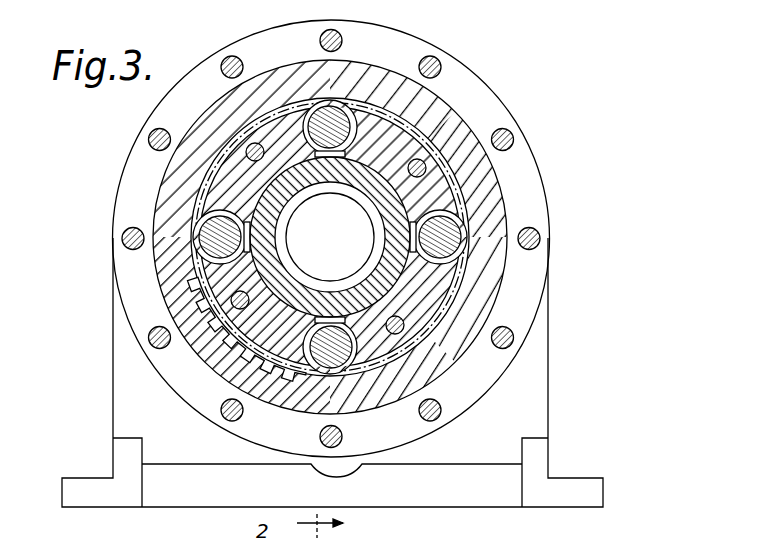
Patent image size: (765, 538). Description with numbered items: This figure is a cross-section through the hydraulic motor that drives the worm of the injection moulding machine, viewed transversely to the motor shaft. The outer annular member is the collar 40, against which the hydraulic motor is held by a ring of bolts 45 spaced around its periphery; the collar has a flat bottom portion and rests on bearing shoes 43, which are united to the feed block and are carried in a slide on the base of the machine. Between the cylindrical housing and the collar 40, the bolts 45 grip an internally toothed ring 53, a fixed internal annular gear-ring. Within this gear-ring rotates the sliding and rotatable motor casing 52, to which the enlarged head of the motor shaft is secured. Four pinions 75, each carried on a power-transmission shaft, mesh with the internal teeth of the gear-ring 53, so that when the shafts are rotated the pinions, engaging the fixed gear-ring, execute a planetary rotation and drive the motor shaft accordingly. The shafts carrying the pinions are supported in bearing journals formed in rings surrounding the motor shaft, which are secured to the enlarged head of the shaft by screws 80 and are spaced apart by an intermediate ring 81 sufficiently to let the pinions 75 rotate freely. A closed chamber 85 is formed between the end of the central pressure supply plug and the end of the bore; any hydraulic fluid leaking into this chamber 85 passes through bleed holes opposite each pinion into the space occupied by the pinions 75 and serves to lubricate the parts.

The collar 40 is at (513, 158).
The bearing shoes 43 is at (86, 492).
The ring of bolts 45 is at (442, 67).
The motor casing 52 is at (248, 251).
The internally toothed ring 53 is at (483, 260).
The pinion 75 is at (458, 207).
The screws 80 is at (390, 326).
The intermediate ring 81 is at (242, 338).
The closed chamber 85 is at (437, 212).